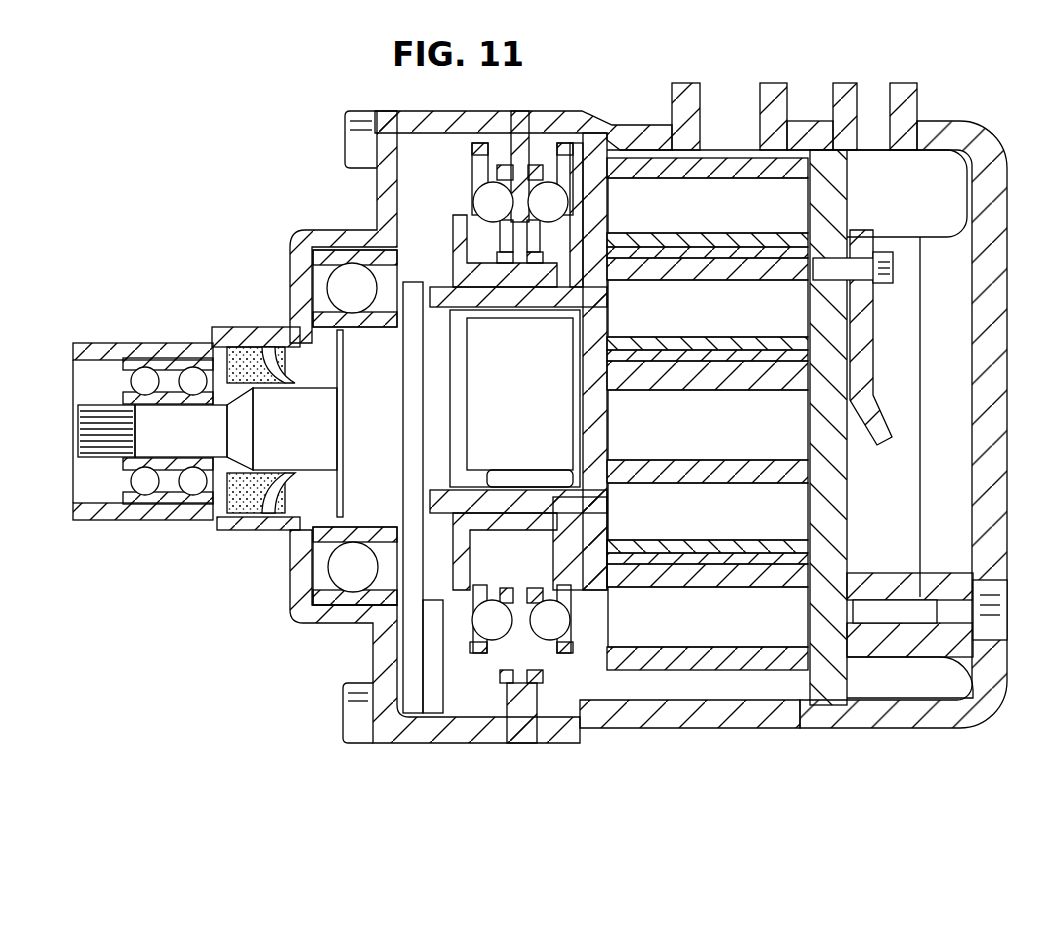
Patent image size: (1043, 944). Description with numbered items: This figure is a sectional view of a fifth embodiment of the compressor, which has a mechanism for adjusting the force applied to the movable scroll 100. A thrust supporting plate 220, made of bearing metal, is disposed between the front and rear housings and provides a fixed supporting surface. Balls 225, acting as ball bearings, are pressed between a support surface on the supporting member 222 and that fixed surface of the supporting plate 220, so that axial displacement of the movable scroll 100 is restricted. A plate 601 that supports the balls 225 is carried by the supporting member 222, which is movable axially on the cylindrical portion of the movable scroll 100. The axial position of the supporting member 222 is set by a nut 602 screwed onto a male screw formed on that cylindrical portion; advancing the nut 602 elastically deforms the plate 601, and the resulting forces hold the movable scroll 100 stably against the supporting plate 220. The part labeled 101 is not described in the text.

The movable scroll 100 is at (655, 158).
The end bracket plate 101 is at (830, 150).
The nut 602 is at (440, 517).
The supporting member 222 is at (455, 565).
The plate 601 is at (470, 640).
The balls 225 is at (497, 630).
The supporting plate 220 is at (527, 730).